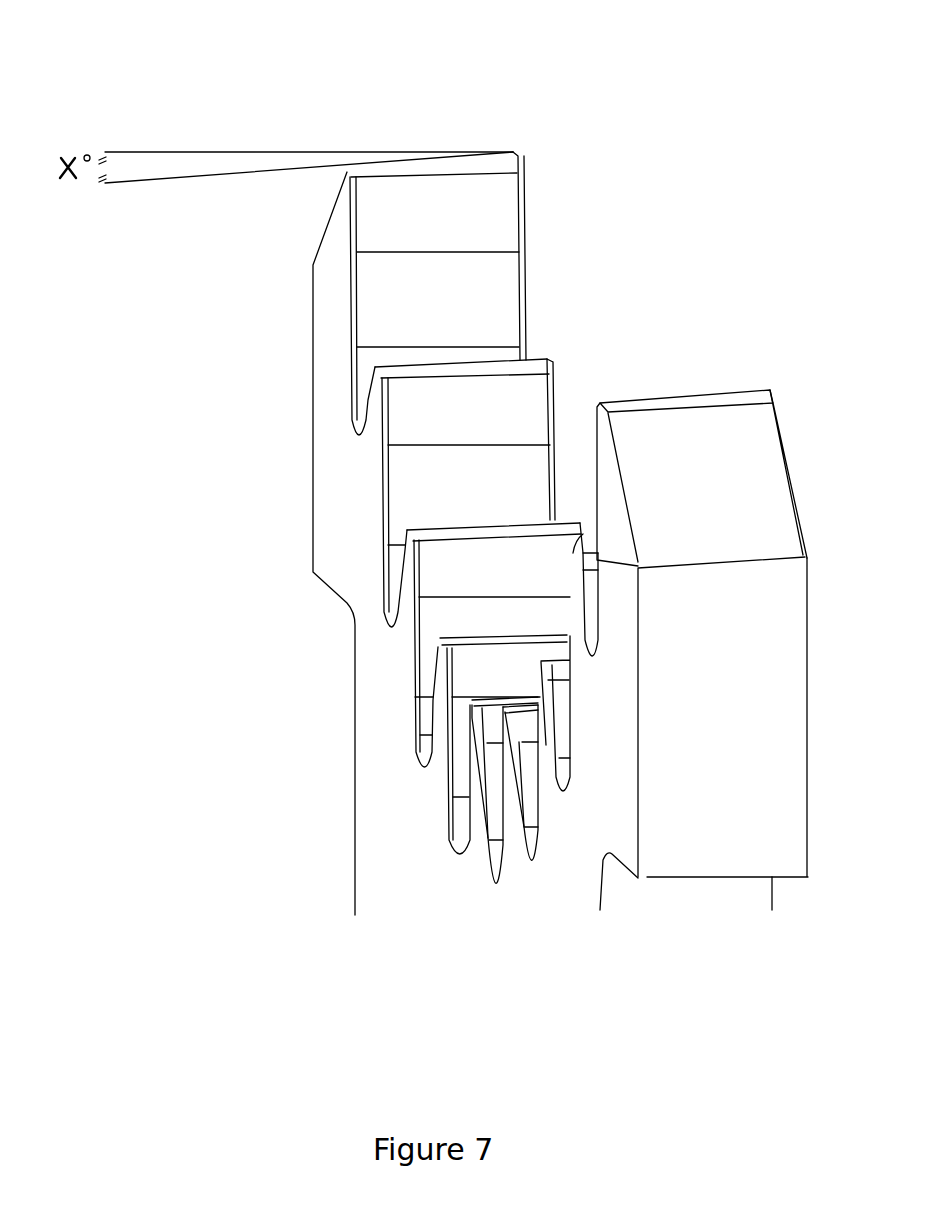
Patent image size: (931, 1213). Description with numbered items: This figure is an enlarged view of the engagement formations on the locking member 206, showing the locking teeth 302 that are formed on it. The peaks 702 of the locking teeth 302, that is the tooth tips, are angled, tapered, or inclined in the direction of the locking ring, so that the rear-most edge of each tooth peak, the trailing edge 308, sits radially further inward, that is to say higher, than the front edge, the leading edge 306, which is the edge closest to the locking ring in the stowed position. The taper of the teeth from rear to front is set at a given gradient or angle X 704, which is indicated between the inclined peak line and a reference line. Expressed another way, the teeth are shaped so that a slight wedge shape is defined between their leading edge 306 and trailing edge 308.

The locking member 206 is at (355, 690).
The locking teeth 302 is at (677, 450).
The leading edge 306 is at (345, 173).
The trailing edge 308 is at (520, 156).
The peaks 702 is at (408, 165).
The angle X 704 is at (187, 167).